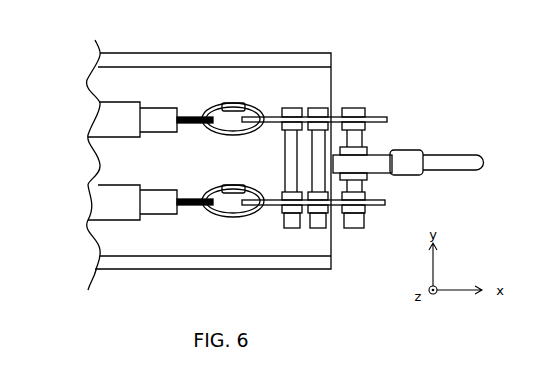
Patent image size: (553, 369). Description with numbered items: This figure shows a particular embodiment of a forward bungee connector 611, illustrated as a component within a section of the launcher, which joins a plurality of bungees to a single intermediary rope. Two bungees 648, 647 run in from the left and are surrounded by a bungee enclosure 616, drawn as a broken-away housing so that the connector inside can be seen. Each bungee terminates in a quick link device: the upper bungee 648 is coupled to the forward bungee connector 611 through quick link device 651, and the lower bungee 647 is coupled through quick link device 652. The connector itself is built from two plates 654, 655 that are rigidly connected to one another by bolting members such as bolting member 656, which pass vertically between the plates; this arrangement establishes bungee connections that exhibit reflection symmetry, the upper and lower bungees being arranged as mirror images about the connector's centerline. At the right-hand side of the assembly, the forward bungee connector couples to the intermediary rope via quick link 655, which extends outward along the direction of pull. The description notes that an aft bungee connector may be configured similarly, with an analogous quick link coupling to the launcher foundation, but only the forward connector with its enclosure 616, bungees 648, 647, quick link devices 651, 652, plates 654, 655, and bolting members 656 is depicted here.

The forward bungee connector 611 is at (389, 132).
The bungee enclosure 616 is at (137, 53).
The bungee 647 is at (107, 208).
The bungee 648 is at (107, 115).
The quick link device 651 is at (232, 106).
The quick link device 652 is at (228, 215).
The plate 654 is at (388, 119).
The plate / quick link 655 is at (483, 163).
The bolting member 656 is at (288, 148).